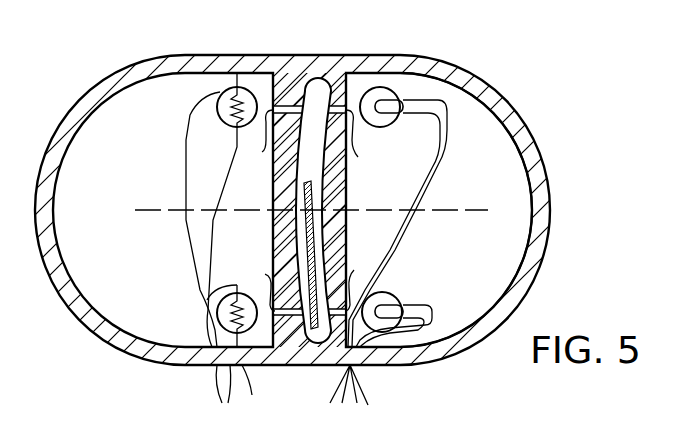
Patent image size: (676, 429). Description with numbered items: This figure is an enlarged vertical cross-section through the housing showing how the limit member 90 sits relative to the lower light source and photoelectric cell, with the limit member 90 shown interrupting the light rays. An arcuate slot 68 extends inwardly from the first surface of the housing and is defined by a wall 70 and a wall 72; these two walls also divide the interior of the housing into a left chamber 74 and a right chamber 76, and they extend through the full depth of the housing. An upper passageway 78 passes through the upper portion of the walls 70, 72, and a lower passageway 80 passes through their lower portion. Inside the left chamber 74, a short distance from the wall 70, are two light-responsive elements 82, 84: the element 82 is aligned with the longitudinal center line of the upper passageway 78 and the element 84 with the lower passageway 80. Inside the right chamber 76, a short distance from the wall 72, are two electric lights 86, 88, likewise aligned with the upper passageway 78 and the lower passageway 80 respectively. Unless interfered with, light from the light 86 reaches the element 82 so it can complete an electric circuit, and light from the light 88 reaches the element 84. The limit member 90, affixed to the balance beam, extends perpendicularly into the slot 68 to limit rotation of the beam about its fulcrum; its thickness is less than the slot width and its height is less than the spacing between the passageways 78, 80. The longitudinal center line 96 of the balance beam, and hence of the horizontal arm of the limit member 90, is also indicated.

The arcuate slot 68 is at (320, 95).
The wall 70 is at (273, 254).
The wall 72 is at (347, 180).
The left chamber 74 is at (118, 315).
The right chamber 76 is at (503, 265).
The upper passageway 78 is at (311, 141).
The lower passageway 80 is at (309, 279).
The light-responsive element 82 is at (218, 109).
The light-responsive element 84 is at (217, 313).
The electric light 86 is at (387, 86).
The electric light 88 is at (396, 298).
The limit member 90 is at (312, 224).
The longitudinal center line 96 is at (311, 213).